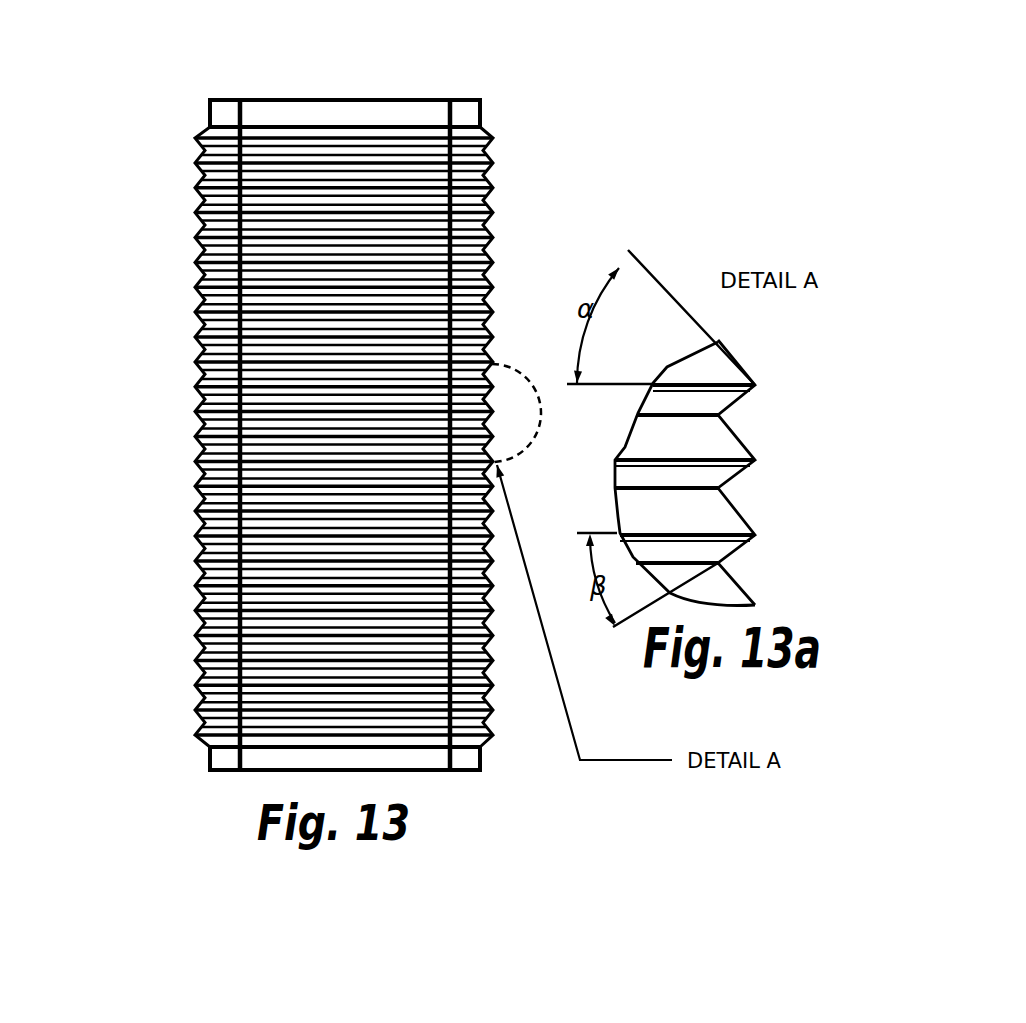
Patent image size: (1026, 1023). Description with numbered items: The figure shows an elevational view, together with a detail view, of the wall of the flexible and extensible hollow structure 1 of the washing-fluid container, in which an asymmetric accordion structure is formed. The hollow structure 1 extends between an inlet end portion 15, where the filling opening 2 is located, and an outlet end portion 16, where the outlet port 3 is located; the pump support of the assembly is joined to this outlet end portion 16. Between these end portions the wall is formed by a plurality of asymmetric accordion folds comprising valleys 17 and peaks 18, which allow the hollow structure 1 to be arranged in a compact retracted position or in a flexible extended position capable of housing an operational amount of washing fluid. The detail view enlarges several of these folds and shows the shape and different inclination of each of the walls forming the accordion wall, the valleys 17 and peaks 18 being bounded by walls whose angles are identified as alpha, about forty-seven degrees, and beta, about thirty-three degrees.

In FIG. 13, the hollow structure 1 is at (178, 447).
In FIG. 13, the filling opening 2 is at (212, 104).
In FIG. 13, the outlet port 3 is at (210, 760).
In FIG. 13, the inlet end portion 15 is at (490, 100).
In FIG. 13, the outlet end portion 16 is at (486, 772).
In FIG. 13, the valleys 17 is at (484, 176).
In FIG. 13A, the valleys 17 is at (718, 415).
In FIG. 13, the peaks 18 is at (490, 140).
In FIG. 13A, the peaks 18 is at (755, 385).